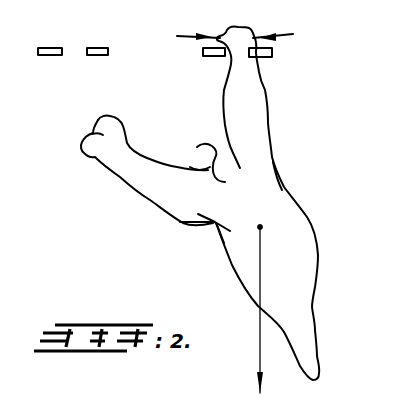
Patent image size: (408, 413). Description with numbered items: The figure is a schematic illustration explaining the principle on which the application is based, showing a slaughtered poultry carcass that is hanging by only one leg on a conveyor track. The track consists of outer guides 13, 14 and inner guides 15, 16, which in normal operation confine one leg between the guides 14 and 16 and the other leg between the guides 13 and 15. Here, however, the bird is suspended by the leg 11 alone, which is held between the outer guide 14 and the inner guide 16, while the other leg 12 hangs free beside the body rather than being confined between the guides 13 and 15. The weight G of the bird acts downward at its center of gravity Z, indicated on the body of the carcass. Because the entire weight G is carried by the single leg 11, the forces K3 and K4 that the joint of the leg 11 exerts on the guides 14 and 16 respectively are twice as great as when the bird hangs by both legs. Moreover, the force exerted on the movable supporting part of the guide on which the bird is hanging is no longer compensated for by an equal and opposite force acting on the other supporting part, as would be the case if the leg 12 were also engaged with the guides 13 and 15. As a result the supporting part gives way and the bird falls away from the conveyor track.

The leg 11 is at (267, 121).
The leg 12 is at (153, 183).
The outer guide 13 is at (50, 56).
The outer guide 14 is at (270, 56).
The inner guide 15 is at (97, 56).
The inner guide 16 is at (216, 52).
The force K3 is at (267, 33).
The force K4 is at (203, 33).
The center of gravity Z is at (268, 226).
The weight G is at (266, 313).